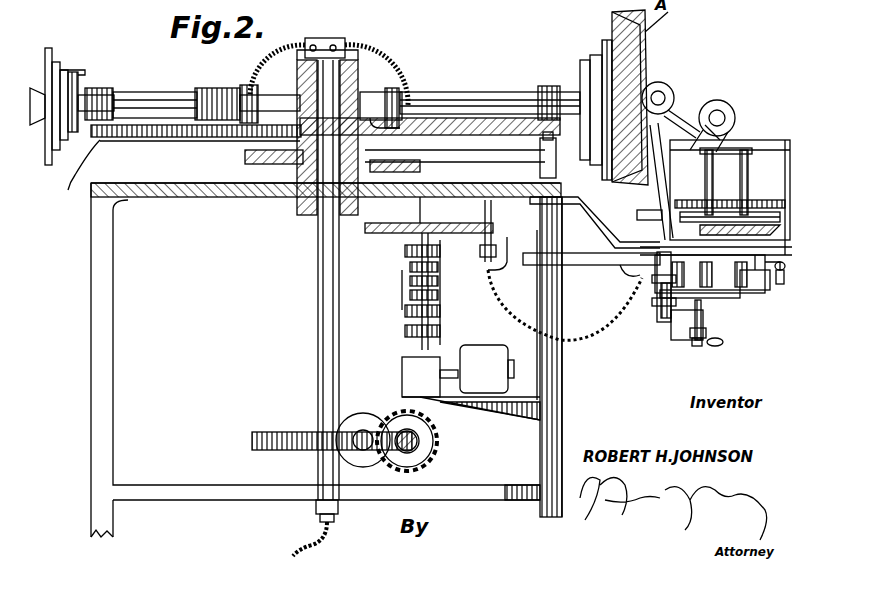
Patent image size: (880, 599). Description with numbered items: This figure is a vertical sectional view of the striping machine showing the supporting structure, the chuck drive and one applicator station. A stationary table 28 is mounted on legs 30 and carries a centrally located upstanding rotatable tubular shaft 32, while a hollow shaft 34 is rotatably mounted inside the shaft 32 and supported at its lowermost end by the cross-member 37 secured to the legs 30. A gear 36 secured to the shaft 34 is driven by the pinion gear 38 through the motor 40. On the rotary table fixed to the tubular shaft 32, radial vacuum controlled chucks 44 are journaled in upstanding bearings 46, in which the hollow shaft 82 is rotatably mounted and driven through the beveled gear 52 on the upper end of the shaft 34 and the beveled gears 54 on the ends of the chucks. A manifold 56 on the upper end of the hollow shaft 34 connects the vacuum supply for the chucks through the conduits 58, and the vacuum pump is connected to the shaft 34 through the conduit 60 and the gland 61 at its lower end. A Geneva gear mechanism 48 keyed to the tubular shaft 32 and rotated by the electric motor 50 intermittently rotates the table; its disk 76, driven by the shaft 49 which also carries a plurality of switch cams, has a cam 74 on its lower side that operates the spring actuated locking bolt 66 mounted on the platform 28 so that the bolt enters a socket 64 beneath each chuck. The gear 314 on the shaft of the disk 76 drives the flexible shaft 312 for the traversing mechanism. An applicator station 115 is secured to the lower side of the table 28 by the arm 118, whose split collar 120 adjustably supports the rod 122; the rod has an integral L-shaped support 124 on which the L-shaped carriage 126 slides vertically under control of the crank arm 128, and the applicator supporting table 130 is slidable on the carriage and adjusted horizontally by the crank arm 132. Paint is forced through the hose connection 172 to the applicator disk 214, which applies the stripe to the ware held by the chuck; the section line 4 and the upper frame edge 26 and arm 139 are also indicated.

The section line 4 is at (95, 143).
The frame top 26 is at (258, 216).
The stationary table 28 is at (188, 197).
The legs 30 is at (98, 288).
The tubular shaft 32 is at (300, 212).
The hollow shaft 34 is at (340, 328).
The gear 36 is at (272, 432).
The cross-member 37 is at (488, 490).
The pinion gear 38 is at (432, 458).
The motor 40 is at (362, 406).
The vacuum controlled chucks 44 is at (78, 70).
The upstanding bearings 46 is at (105, 88).
The Geneva gear mechanism 48 is at (244, 156).
The shaft 49 is at (420, 245).
The electric motor 50 is at (478, 347).
The beveled gear 52 is at (372, 92).
The beveled gears 54 is at (400, 100).
The manifold 56 is at (325, 37).
The conduits 58 is at (368, 52).
The conduit 60 is at (310, 544).
The gland 61 is at (314, 506).
The socket 64 is at (77, 173).
The spring actuated locking bolt 66 is at (540, 148).
The cam 74 is at (429, 215).
The disk 76 is at (450, 156).
The hollow shaft 82 is at (150, 84).
The applicator station 115 is at (716, 197).
The arm 118 is at (595, 200).
The split collar 120 is at (622, 284).
The rod 122 is at (584, 264).
The L-shaped support 124 is at (662, 315).
The L-shaped carriage 126 is at (685, 270).
The crank arm 128 is at (690, 348).
The applicator supporting table 130 is at (762, 290).
The crank arm 132 is at (782, 290).
The post 139 is at (671, 181).
The hose connection 172 is at (733, 110).
The applicator disk 214 is at (674, 96).
The flexible shaft 312 is at (506, 315).
The gear 314 is at (464, 232).